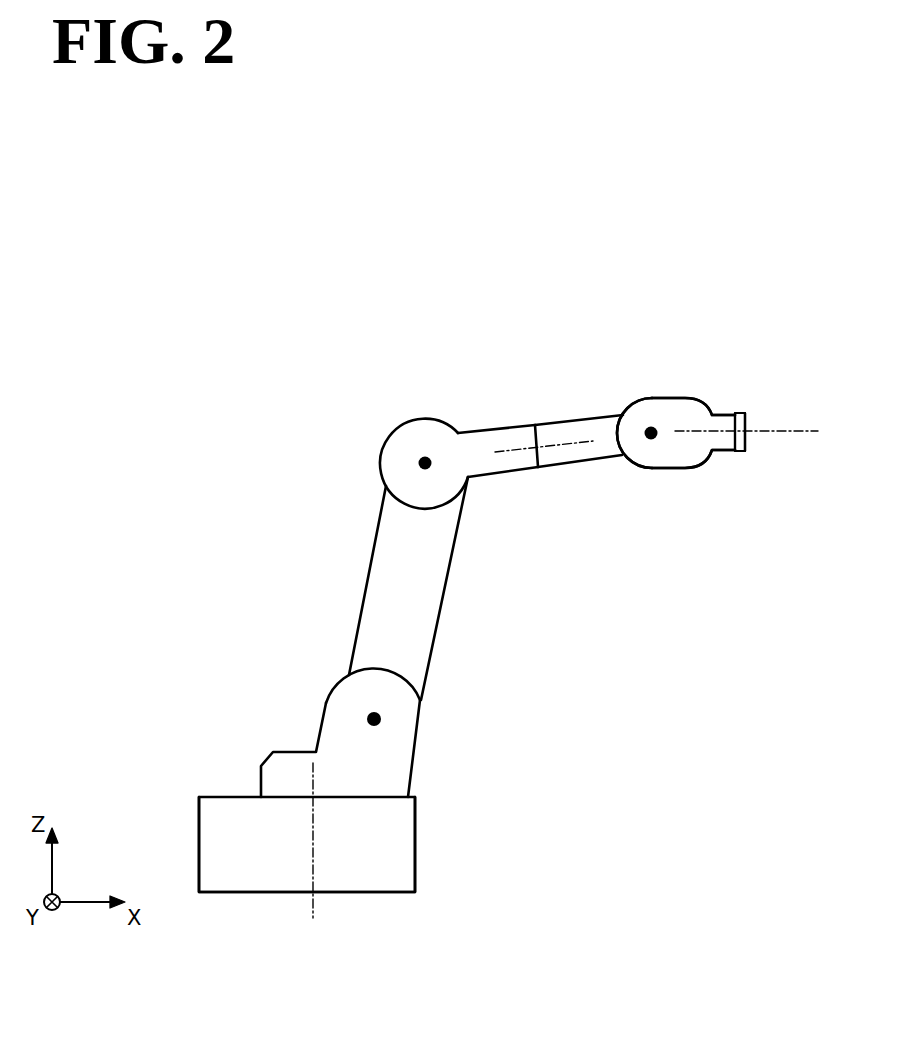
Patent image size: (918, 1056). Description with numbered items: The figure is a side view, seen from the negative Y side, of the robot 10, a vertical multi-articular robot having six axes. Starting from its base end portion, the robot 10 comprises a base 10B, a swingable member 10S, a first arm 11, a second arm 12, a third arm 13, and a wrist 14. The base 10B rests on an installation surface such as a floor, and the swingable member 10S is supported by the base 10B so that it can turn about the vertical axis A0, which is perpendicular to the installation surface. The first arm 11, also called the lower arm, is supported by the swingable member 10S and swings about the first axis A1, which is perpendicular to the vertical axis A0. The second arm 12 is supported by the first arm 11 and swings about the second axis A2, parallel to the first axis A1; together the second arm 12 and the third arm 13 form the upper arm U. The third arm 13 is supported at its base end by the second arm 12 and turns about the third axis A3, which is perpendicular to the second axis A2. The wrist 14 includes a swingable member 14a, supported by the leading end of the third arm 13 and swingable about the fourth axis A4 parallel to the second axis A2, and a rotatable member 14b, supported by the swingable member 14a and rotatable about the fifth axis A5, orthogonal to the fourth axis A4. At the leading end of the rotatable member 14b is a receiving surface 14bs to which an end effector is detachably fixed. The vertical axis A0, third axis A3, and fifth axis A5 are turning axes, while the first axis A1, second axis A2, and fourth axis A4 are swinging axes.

The robot 10 is at (306, 461).
The base 10B is at (250, 815).
The swingable member 10S is at (342, 738).
The first arm 11 is at (396, 583).
The second arm 12 is at (482, 447).
The third arm 13 is at (578, 432).
The upper arm U is at (568, 336).
The wrist 14 is at (757, 349).
The swingable member 14a is at (680, 412).
The rotatable member 14b is at (741, 412).
The receiving surface 14bs is at (745, 442).
The vertical axis A0 is at (318, 863).
The first axis A1 is at (381, 720).
The second axis A2 is at (428, 466).
The third axis A3 is at (550, 445).
The fourth axis A4 is at (651, 438).
The fifth axis A5 is at (797, 432).